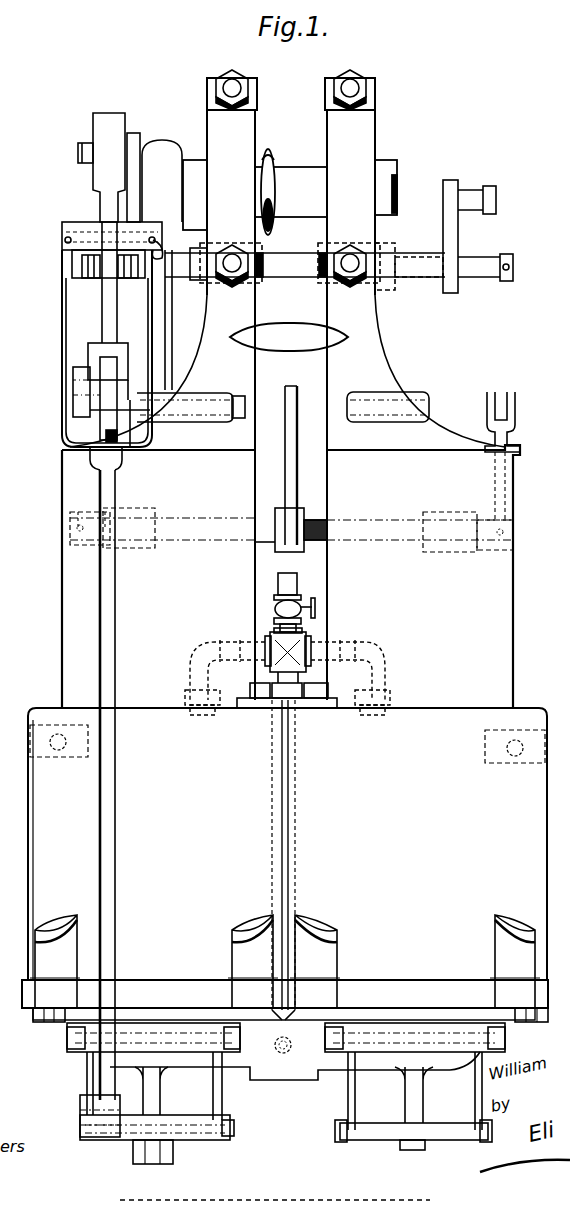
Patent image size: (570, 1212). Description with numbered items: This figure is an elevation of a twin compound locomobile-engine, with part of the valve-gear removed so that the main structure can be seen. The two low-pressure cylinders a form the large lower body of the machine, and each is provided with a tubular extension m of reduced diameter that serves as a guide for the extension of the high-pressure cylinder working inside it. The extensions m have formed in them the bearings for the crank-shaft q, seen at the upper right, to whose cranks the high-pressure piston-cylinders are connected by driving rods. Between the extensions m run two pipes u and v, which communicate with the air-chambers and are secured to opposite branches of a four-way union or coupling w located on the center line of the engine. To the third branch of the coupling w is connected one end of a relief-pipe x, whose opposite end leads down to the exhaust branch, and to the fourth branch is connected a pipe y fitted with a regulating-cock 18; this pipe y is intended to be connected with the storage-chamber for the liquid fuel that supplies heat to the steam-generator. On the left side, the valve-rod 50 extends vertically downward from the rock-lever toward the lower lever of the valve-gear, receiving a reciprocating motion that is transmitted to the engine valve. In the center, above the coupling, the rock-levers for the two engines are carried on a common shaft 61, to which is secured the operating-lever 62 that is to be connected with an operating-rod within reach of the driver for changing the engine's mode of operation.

The crank-shaft q is at (454, 236).
The extension of the low-pressure cylinder m is at (396, 335).
The operating-lever 62 is at (290, 392).
The shaft 61 is at (268, 520).
The pipe y is at (280, 580).
The regulating-cock 18 is at (315, 607).
The four-way union or coupling w is at (270, 645).
The pipe u is at (196, 646).
The pipe v is at (378, 646).
The relief-pipe x is at (282, 698).
The rod 50 is at (107, 805).
The low-pressure cylinder a is at (285, 864).